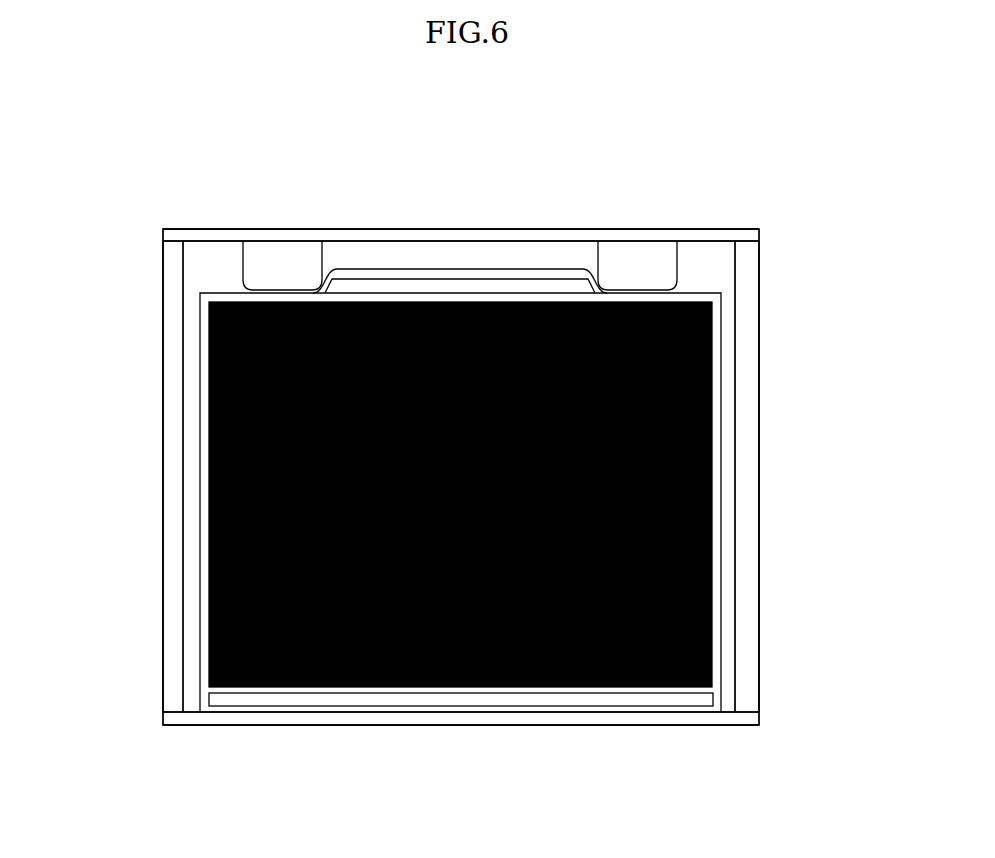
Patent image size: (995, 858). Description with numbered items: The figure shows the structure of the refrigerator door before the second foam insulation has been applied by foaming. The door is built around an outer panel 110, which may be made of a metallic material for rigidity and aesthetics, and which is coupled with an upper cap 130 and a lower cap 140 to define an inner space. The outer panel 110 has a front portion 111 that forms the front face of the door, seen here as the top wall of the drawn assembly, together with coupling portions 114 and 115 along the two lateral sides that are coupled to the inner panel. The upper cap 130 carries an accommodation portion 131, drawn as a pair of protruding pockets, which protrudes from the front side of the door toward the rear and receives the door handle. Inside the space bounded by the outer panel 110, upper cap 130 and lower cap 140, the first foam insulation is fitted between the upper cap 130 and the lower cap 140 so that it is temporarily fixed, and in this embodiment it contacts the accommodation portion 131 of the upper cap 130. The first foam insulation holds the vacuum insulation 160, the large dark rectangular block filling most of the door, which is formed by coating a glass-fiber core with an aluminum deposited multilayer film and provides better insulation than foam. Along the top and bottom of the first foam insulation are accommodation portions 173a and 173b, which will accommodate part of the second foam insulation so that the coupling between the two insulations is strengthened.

The outer panel 110 is at (461, 477).
The front portion 111 is at (207, 264).
The coupling portion 114 is at (172, 505).
The coupling portion 115 is at (745, 478).
The upper cap 130 is at (377, 229).
The accommodation portion 131 is at (270, 250).
The lower cap 140 is at (530, 718).
The vacuum insulation 160 is at (208, 398).
The accommodation portion 173a is at (465, 288).
The accommodation portion 173b is at (404, 699).